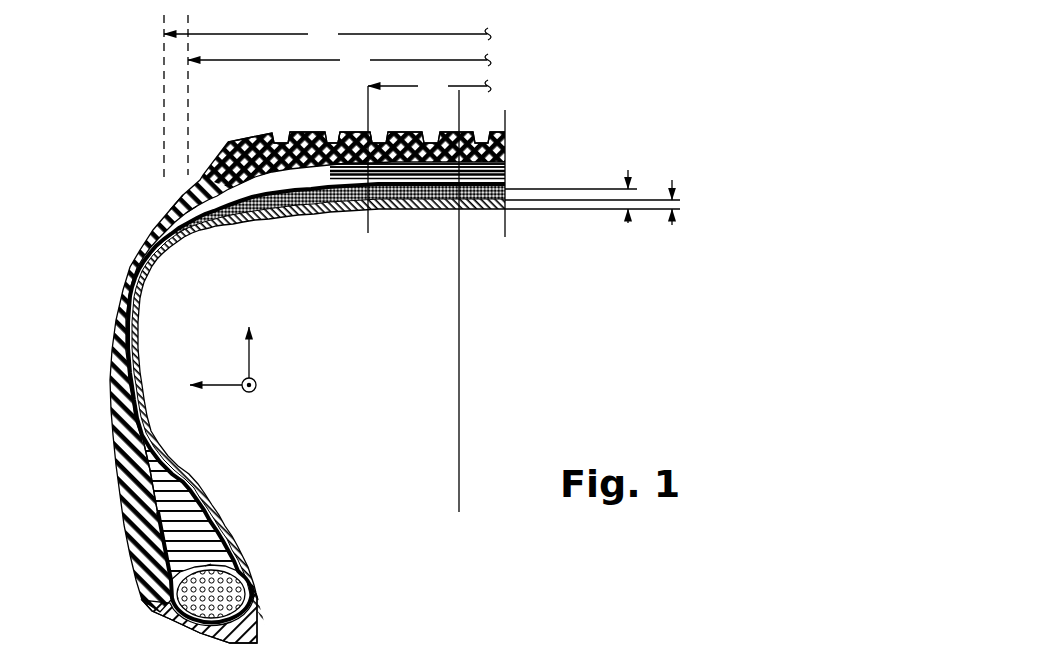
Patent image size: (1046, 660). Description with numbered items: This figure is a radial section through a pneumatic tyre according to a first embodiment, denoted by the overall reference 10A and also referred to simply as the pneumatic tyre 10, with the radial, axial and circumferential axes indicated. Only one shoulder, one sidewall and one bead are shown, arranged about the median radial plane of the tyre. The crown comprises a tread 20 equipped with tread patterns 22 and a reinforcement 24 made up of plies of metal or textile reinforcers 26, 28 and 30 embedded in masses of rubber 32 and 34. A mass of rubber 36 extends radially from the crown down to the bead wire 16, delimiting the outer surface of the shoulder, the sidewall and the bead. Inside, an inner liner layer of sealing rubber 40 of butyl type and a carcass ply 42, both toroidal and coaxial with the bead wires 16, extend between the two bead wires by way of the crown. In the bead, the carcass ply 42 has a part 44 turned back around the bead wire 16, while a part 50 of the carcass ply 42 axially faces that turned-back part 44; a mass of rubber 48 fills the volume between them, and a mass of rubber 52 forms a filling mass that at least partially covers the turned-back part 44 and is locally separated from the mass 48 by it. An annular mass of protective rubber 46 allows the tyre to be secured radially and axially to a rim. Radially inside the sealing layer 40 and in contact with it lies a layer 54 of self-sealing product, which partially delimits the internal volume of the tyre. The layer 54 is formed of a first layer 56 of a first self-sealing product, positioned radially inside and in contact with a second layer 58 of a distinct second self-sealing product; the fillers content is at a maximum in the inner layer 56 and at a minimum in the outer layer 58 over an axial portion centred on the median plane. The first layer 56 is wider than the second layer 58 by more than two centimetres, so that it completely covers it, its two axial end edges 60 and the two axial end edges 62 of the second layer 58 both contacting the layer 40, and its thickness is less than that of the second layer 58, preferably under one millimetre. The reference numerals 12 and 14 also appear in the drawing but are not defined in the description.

The pneumatic tyre 10 is at (130, 143).
The pneumatic tyre 10A is at (528, 328).
The crown 12 is at (338, 258).
The sidewall 14 is at (340, 437).
The bead wire 16 is at (240, 568).
The tread 20 is at (523, 132).
The tread patterns 22 is at (353, 138).
The reinforcement 24 is at (537, 160).
The ply of reinforcers 26 is at (508, 160).
The ply of reinforcers 28 is at (508, 170).
The ply of reinforcers 30 is at (508, 185).
The mass of rubber 32 is at (278, 173).
The mass of rubber 34 is at (315, 177).
The mass of rubber 36 is at (120, 302).
The inner liner layer of sealing rubber 40 is at (150, 270).
The carcass ply 42 is at (163, 477).
The turned-back part 44 is at (150, 593).
The annular mass of protective rubber 46 is at (258, 622).
The mass of rubber 48 is at (190, 550).
The part of the carcass ply 50 is at (213, 543).
The mass of rubber 52 is at (147, 558).
The layer of self-sealing product 54 is at (433, 240).
The first layer 56 is at (475, 207).
The second layer 58 is at (388, 207).
The axial end edges 60 is at (155, 222).
The axial end edges 62 is at (183, 197).